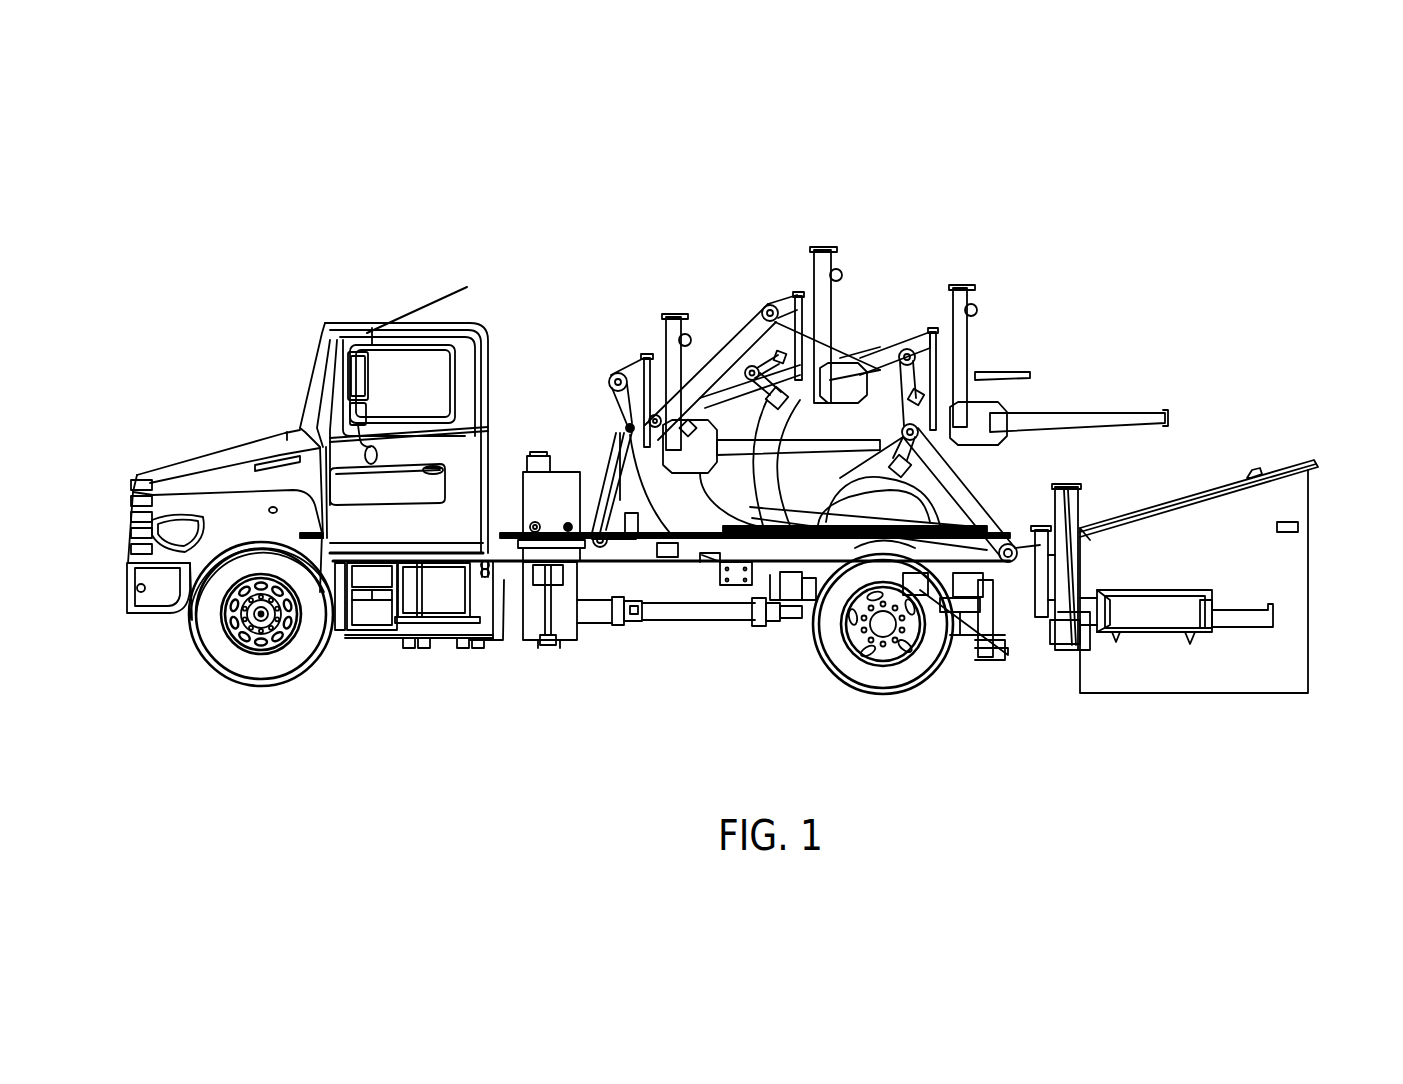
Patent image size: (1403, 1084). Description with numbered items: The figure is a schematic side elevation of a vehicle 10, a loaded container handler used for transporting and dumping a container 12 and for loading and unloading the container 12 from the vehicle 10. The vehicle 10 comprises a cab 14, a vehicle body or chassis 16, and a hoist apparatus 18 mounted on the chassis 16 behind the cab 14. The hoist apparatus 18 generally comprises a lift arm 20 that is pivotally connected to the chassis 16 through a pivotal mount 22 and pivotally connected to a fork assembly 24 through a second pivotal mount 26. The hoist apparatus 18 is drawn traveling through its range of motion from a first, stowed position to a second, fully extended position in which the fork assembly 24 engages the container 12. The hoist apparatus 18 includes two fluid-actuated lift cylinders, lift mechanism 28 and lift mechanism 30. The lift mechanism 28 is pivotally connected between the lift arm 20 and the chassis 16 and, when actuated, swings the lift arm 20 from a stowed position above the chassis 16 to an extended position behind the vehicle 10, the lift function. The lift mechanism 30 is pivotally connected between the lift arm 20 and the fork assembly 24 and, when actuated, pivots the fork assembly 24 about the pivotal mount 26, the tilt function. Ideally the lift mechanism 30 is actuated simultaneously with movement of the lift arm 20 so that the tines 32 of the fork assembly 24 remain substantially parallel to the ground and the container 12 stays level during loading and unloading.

The vehicle 10 is at (498, 258).
The container 12 is at (1298, 578).
The cab 14 is at (328, 305).
The chassis 16 is at (543, 552).
The hoist apparatus 18 is at (962, 200).
The lift arm 20 is at (850, 487).
The pivotal mount 22 is at (757, 616).
The fork assembly 24 is at (1120, 488).
The pivotal mount 26 is at (1008, 545).
The lift mechanism 28 is at (935, 500).
The lift mechanism 30 is at (740, 383).
The tines 32 is at (1080, 416).